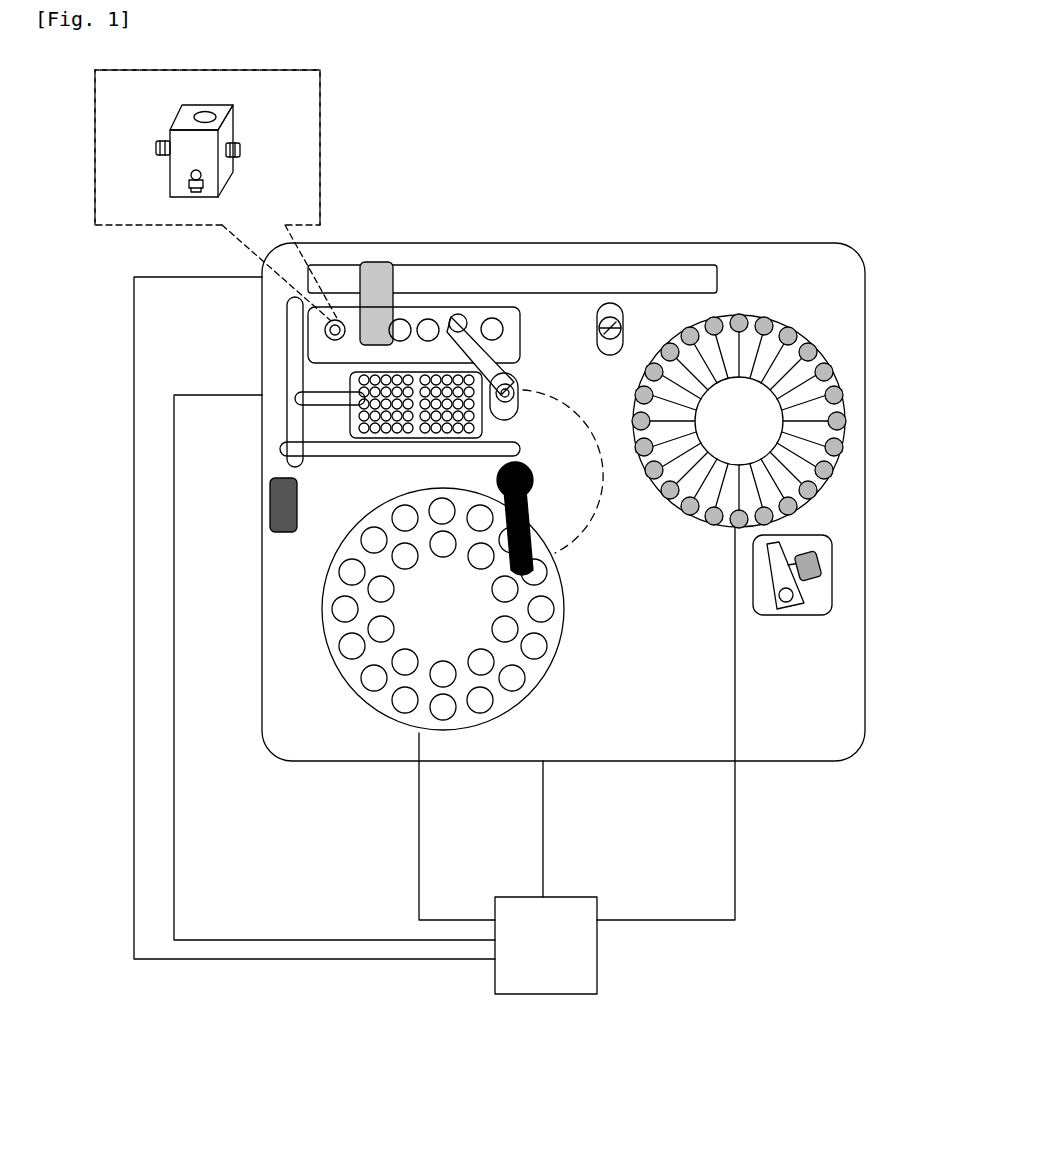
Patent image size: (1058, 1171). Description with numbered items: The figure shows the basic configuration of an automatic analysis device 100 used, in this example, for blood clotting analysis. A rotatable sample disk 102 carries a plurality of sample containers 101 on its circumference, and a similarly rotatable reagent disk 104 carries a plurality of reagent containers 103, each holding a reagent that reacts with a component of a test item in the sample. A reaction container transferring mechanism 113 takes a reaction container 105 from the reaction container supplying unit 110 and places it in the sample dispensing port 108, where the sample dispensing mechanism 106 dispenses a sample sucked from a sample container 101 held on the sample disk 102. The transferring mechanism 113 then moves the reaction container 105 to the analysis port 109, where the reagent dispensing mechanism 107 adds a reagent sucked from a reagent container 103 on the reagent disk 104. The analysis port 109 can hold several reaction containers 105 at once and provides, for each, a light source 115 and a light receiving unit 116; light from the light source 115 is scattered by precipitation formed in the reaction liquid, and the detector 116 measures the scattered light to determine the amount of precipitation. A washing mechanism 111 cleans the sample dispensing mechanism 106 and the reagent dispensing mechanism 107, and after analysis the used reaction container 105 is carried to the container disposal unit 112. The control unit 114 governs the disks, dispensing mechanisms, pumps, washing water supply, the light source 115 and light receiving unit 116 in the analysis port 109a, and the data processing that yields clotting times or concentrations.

The automatic analysis device 100 is at (893, 187).
The sample container 101 is at (350, 650).
The sample disk 102 is at (557, 640).
The reagent container 103 is at (770, 568).
The reagent disk 104 is at (828, 360).
The reaction container 105 is at (330, 338).
The sample dispensing mechanism 106 is at (530, 508).
The reagent dispensing mechanism 107 is at (376, 272).
The sample dispensing port 108 is at (518, 420).
The analysis port 109 is at (325, 331).
The analysis port 109a is at (238, 128).
The reaction container supplying unit 110 is at (352, 440).
The washing mechanism 111 is at (625, 327).
The container disposal unit 112 is at (270, 515).
The reaction container transferring mechanism 113 is at (500, 370).
The control unit 114 is at (575, 940).
The light source 115 is at (206, 186).
The light receiving unit (detector) 116 is at (156, 147).